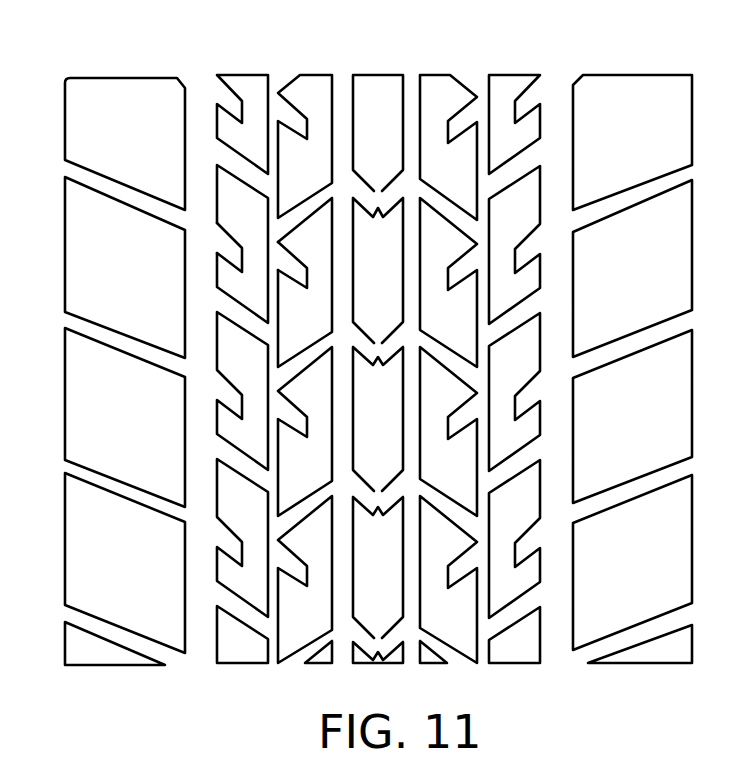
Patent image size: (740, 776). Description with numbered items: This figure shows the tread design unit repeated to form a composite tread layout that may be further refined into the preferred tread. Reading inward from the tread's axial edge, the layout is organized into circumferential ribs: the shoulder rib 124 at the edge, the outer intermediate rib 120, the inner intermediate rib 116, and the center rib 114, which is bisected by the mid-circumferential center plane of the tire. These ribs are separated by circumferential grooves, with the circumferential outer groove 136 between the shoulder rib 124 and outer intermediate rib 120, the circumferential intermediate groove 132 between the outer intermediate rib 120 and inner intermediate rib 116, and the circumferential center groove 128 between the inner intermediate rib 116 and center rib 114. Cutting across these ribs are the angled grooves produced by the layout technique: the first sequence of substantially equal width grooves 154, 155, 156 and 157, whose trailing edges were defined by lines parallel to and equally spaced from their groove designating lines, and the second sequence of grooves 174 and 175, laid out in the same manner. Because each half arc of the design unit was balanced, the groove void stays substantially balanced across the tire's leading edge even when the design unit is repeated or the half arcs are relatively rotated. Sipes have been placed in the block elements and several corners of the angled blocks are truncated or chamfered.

The center rib 114 is at (375, 83).
The inner intermediate rib 116 is at (312, 88).
The outer intermediate rib 120 is at (248, 82).
The shoulder rib 124 is at (122, 80).
The circumferential center groove 128 is at (345, 662).
The circumferential intermediate groove 132 is at (277, 658).
The circumferential outer groove 136 is at (203, 652).
The groove 154 is at (225, 242).
The groove 155 is at (298, 276).
The groove 156 is at (235, 458).
The groove 157 is at (362, 337).
The groove 174 is at (123, 342).
The groove 175 is at (310, 205).